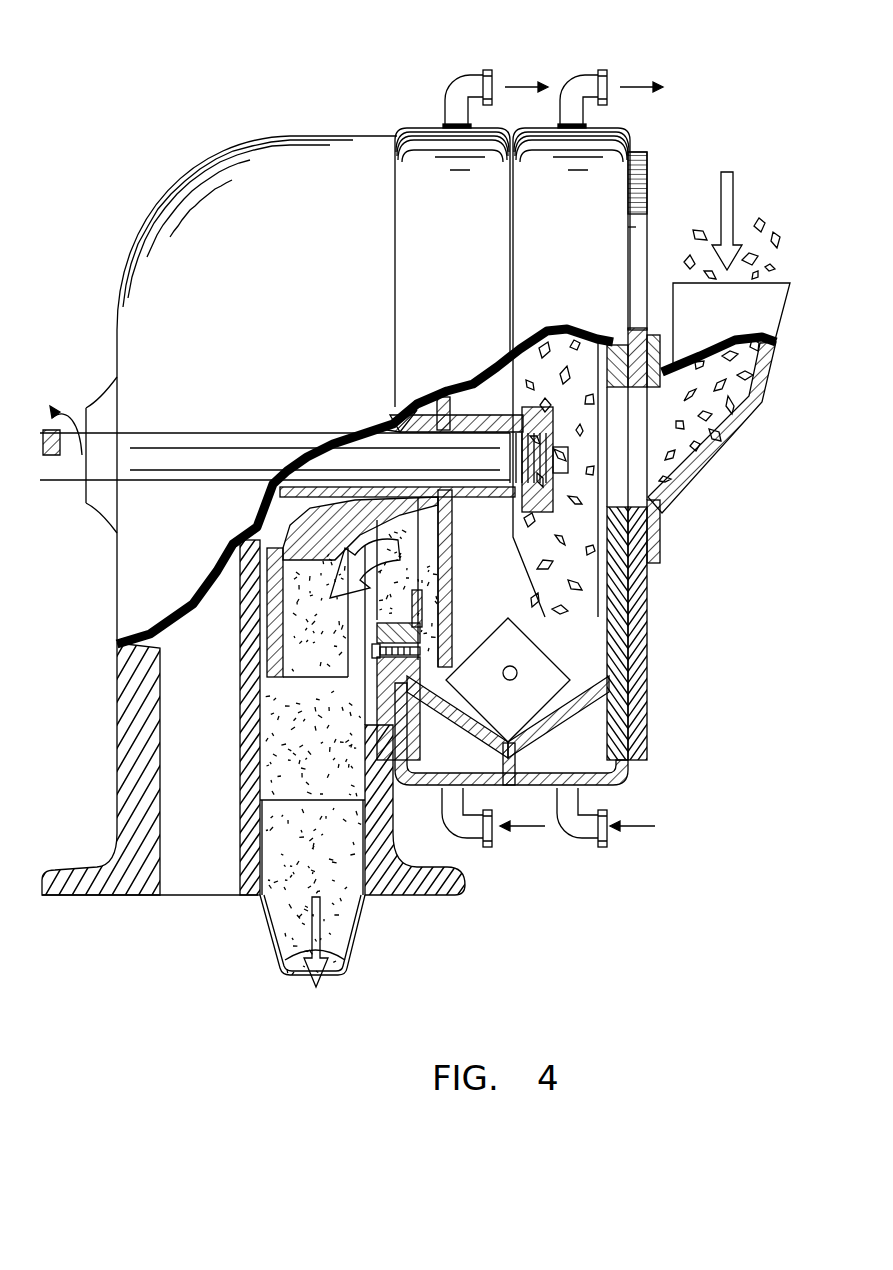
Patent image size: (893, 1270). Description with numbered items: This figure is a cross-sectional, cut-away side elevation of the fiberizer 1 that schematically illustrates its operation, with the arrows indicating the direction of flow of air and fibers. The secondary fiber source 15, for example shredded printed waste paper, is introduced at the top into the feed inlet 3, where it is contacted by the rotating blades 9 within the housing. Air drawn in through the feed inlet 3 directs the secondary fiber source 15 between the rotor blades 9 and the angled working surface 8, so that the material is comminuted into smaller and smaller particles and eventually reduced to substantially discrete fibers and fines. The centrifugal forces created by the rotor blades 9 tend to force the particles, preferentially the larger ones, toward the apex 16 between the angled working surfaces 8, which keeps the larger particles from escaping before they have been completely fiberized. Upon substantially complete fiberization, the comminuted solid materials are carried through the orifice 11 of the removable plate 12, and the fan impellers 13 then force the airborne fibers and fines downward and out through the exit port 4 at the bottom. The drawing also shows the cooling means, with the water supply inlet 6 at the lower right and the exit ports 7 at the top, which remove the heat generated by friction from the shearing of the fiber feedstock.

The fiberizer 1 is at (289, 80).
The feed inlet 3 is at (714, 331).
The exit port 4 is at (362, 925).
The water supply inlet 6 is at (465, 835).
The exit ports 7 is at (452, 103).
The working surface 8 is at (446, 700).
The rotating blades 9 is at (550, 690).
The orifice 11 is at (452, 535).
The removable plate 12 is at (452, 592).
The fan impellers 13 is at (283, 682).
The secondary fiber source 15 is at (797, 222).
The apex 16 is at (506, 760).